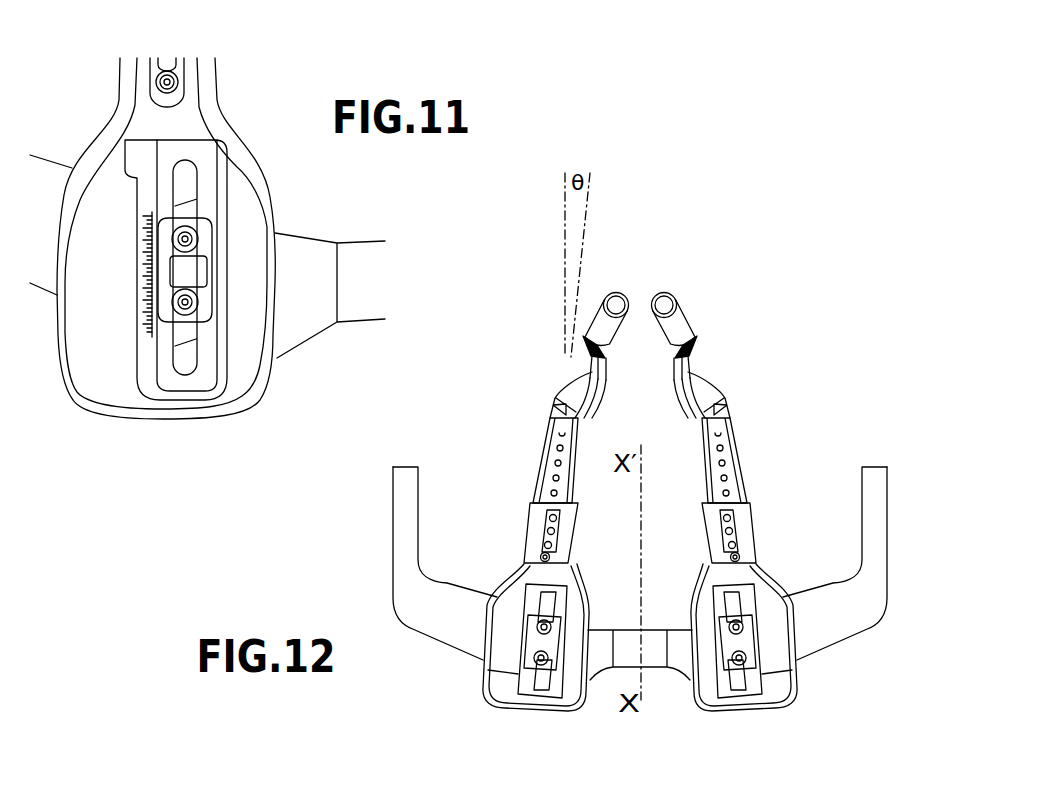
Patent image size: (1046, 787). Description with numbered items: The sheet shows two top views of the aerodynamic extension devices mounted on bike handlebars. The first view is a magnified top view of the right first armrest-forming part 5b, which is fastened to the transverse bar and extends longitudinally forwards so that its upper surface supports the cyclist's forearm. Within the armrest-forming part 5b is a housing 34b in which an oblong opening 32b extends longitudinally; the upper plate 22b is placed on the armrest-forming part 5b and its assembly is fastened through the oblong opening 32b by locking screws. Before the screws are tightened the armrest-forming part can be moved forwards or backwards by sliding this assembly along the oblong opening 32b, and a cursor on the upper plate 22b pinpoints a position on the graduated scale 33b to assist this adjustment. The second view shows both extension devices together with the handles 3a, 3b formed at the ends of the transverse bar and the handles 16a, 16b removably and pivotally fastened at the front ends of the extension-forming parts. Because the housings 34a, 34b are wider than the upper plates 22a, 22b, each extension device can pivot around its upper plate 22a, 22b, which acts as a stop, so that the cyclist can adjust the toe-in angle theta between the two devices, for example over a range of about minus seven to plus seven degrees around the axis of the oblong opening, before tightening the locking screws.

In FIG. 12, the handle 3a is at (410, 507).
In FIG. 12, the handle 3b is at (873, 488).
In FIG. 11, the first armrest-forming part 5b is at (237, 375).
In FIG. 12, the handle 16a is at (605, 322).
In FIG. 12, the handle 16b is at (676, 330).
In FIG. 12, the upper plate 22a is at (796, 656).
In FIG. 11, the upper plate 22b is at (203, 238).
In FIG. 12, the upper plate 22b is at (516, 677).
In FIG. 11, the oblong opening 32b is at (182, 348).
In FIG. 11, the graduated scale 33b is at (142, 252).
In FIG. 12, the housing 34a is at (750, 566).
In FIG. 11, the housing 34b is at (220, 180).
In FIG. 12, the housing 34b is at (570, 574).